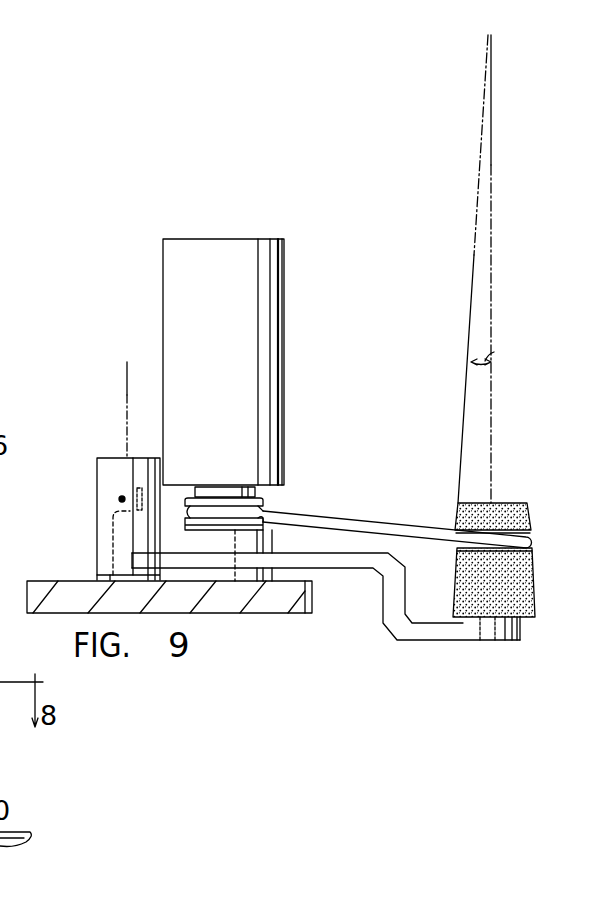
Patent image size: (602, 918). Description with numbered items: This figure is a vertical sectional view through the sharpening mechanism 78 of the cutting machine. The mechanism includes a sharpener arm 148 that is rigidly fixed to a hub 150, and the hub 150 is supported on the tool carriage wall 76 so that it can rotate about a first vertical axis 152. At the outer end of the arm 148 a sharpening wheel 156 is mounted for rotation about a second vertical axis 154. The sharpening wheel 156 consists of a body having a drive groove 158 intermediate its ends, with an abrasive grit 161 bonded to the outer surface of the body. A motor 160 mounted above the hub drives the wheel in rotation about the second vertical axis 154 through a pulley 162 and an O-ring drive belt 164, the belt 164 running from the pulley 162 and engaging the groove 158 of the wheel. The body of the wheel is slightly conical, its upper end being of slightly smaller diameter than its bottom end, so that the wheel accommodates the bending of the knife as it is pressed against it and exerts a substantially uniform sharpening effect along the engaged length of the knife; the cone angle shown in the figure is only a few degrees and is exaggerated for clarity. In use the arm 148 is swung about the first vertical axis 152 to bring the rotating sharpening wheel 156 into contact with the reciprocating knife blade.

The tool carriage wall 76 is at (55, 588).
The sharpening mechanism 78 is at (361, 345).
The sharpener arm 148 is at (428, 633).
The hub 150 is at (105, 531).
The first vertical axis 152 is at (125, 393).
The second vertical axis 154 is at (495, 425).
The sharpening wheel 156 is at (540, 597).
The drive groove 158 is at (532, 545).
The motor 160 is at (285, 261).
The abrasive grit 161 is at (538, 575).
The pulley 162 is at (270, 502).
The O-ring drive belt 164 is at (340, 517).